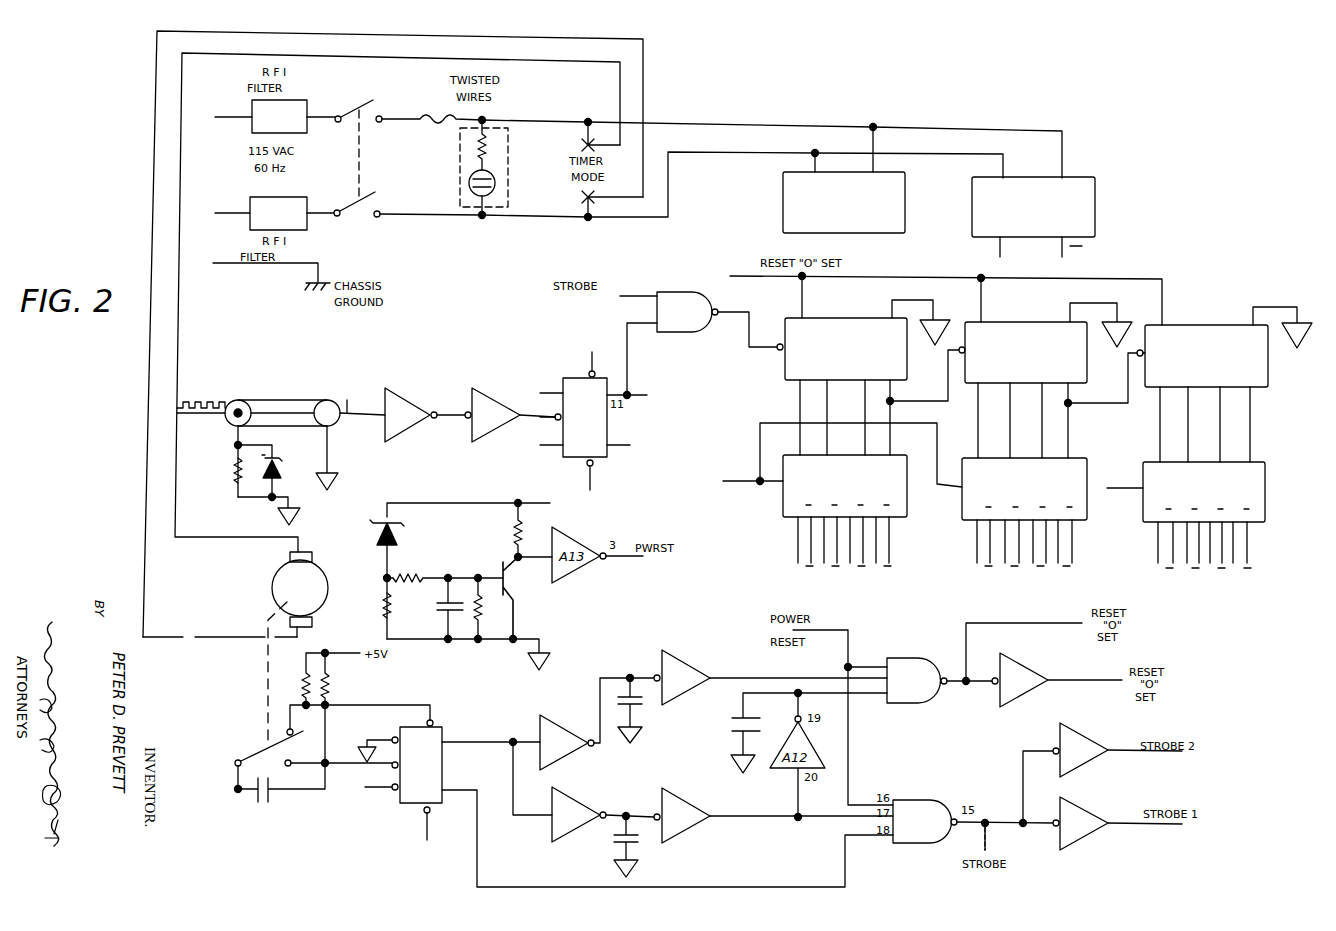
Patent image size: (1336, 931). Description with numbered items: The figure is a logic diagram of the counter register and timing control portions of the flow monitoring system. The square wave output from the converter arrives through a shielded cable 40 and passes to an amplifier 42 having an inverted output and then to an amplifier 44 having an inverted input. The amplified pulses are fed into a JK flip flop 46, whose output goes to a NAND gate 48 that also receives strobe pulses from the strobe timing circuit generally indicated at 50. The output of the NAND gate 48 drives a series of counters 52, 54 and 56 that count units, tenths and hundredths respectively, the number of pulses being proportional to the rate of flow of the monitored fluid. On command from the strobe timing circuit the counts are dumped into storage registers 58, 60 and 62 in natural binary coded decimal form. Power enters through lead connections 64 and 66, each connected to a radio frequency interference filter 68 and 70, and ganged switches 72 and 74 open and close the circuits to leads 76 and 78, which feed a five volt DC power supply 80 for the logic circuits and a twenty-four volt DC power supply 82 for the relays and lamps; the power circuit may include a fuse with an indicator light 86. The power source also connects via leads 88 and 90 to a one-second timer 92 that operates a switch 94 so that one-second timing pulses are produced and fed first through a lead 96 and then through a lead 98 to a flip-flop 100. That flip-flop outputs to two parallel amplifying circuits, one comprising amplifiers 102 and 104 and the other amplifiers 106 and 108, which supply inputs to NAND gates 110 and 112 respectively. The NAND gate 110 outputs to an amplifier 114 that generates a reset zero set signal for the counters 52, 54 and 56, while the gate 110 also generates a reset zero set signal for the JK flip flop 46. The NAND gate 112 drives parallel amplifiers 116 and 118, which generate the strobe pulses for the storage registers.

The shielded cable 40 is at (347, 410).
The amplifier 42 is at (400, 390).
The amplifier 44 is at (504, 396).
The JK flip flop 46 is at (607, 422).
The NAND gate 48 is at (703, 332).
The strobe timing circuit 50 is at (318, 840).
The counter 52 is at (867, 305).
The counter 54 is at (1045, 322).
The counter 56 is at (1222, 325).
The storage register 58 is at (907, 517).
The storage register 60 is at (1087, 520).
The storage register 62 is at (1265, 522).
The lead connection 64 is at (232, 117).
The lead connection 66 is at (233, 213).
The radio frequency interference filter 68 is at (308, 109).
The radio frequency interference filter 70 is at (307, 220).
The ganged switch 72 is at (373, 100).
The ganged switch 74 is at (377, 192).
The lead 76 is at (385, 121).
The lead 78 is at (445, 214).
The 5 volt DC power supply 80 is at (783, 196).
The 24 volt DC power supply 82 is at (1095, 218).
The indicator light 86 is at (508, 186).
The lead 88 is at (146, 483).
The lead 90 is at (175, 505).
The one-second timer 92 is at (328, 592).
The switch 94 is at (265, 748).
The lead 96 is at (403, 683).
The lead 98 is at (348, 767).
The flip-flop 100 is at (442, 762).
The amplifier 102 is at (562, 726).
The amplifier 104 is at (690, 662).
The amplifier 106 is at (580, 801).
The amplifier 108 is at (690, 803).
The NAND gate 110 is at (937, 647).
The NAND gate 112 is at (905, 800).
The amplifier 114 is at (1034, 666).
The amplifier 116 is at (1090, 738).
The amplifier 118 is at (1093, 810).